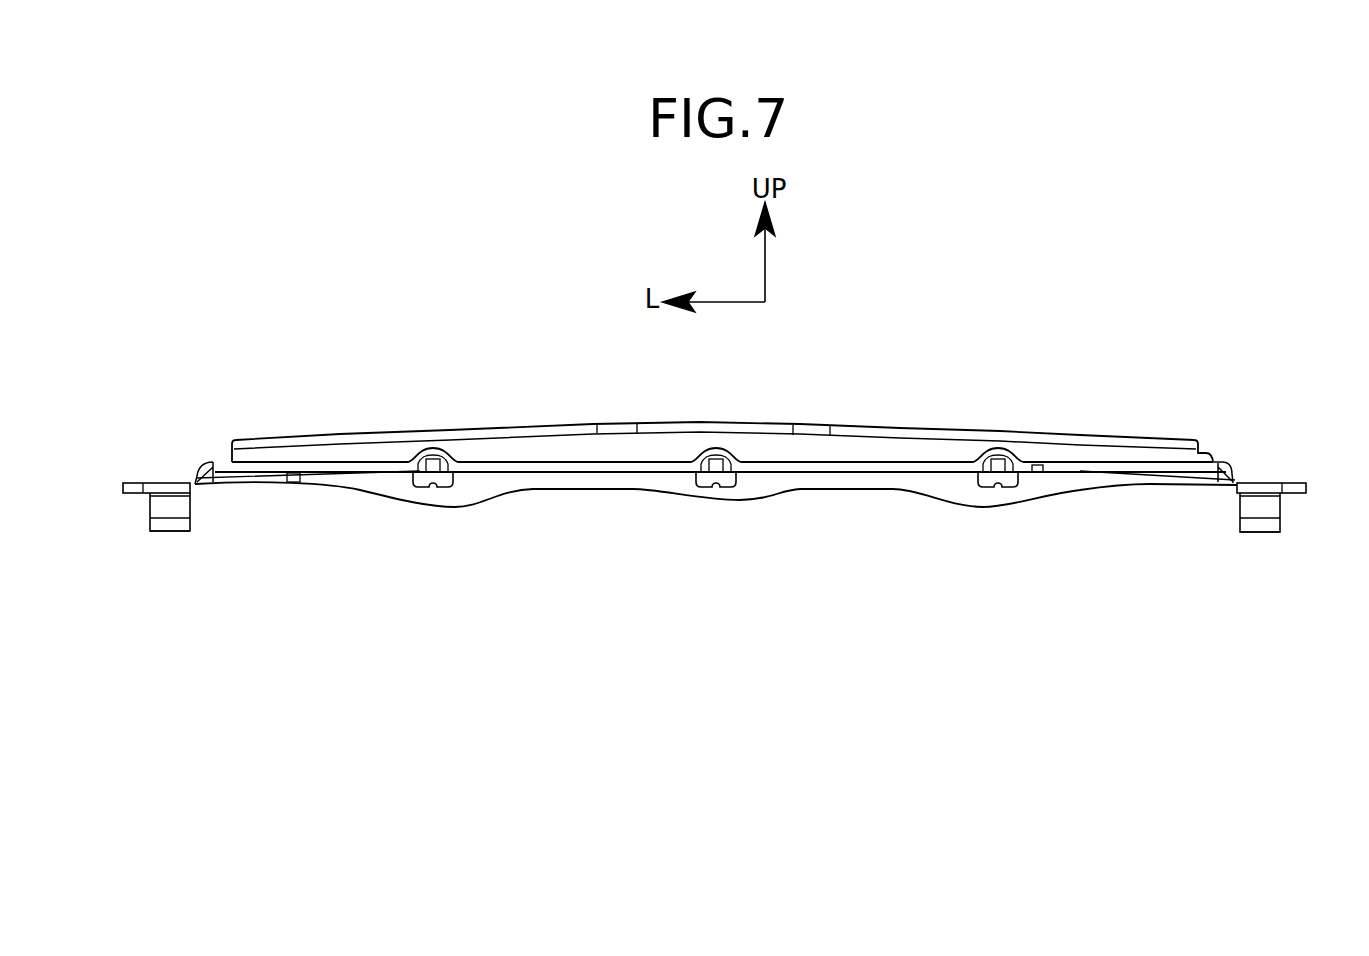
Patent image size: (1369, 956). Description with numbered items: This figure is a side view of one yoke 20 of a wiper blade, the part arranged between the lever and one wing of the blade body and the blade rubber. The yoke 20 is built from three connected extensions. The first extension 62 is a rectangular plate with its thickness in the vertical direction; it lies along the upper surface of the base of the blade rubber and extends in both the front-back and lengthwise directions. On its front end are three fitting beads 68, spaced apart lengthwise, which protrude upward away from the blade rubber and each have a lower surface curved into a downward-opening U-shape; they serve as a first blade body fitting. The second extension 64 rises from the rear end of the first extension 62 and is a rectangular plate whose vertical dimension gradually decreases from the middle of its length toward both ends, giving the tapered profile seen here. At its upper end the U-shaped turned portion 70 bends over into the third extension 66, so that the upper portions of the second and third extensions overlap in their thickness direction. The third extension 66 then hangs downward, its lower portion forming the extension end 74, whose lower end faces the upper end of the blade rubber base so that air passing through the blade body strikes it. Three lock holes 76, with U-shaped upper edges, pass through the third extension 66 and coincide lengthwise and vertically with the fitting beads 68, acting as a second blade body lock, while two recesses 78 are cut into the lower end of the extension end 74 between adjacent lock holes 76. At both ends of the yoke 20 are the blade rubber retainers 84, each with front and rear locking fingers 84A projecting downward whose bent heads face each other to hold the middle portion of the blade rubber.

The yoke 20 is at (841, 266).
The first extension 62 is at (893, 474).
The second extension 64 is at (623, 443).
The third extension 66 is at (667, 498).
The fitting bead 68 is at (433, 448).
The turned portion 70 is at (892, 424).
The extension end 74 is at (482, 499).
The lock hole 76 is at (433, 487).
The recess 78 is at (598, 493).
The blade rubber retainer 84 is at (149, 508).
The locking finger 84A is at (170, 531).